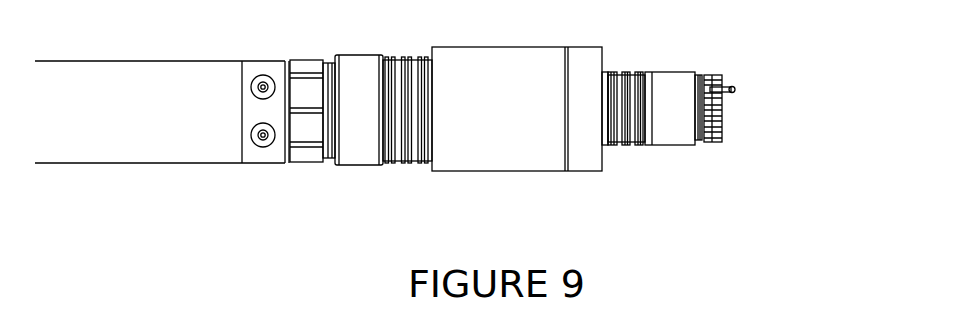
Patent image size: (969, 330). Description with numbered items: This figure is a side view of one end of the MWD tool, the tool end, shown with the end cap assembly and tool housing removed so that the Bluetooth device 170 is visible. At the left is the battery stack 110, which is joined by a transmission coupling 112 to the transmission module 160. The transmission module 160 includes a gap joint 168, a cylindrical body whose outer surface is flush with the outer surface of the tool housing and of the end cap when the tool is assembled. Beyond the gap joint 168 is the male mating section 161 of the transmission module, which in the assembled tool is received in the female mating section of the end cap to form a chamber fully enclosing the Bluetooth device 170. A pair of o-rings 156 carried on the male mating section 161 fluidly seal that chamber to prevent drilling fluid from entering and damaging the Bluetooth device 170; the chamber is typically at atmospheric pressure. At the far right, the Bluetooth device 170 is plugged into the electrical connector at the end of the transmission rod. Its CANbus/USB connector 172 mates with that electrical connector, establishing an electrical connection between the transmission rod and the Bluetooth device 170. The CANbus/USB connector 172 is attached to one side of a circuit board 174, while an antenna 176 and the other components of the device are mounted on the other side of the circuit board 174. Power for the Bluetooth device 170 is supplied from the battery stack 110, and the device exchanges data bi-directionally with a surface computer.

The battery stack 110 is at (142, 68).
The transmission coupling 112 is at (302, 67).
The o-rings 156 is at (610, 71).
The transmission module 160 is at (357, 152).
The male mating section 161 is at (662, 132).
The gap joint 168 is at (492, 60).
The Bluetooth device 170 is at (731, 117).
The CANbus/USB connector 172 is at (703, 75).
The circuit board 174 is at (703, 143).
The antenna 176 is at (737, 87).